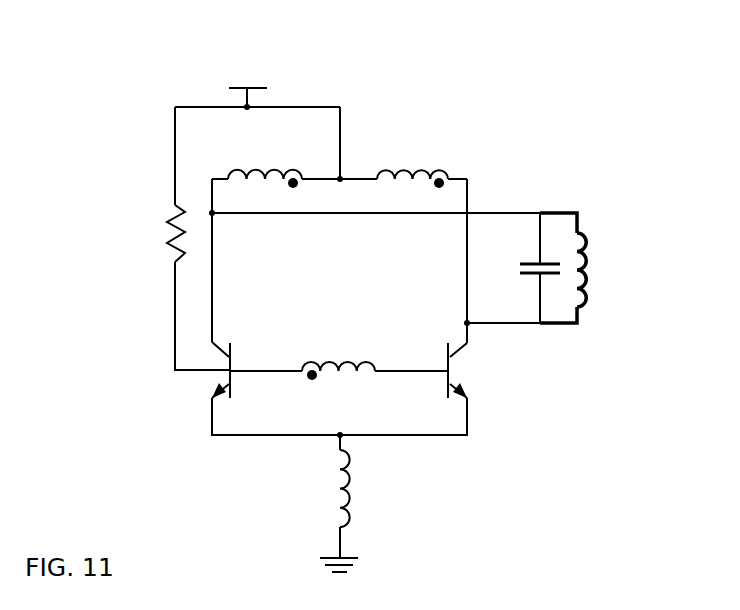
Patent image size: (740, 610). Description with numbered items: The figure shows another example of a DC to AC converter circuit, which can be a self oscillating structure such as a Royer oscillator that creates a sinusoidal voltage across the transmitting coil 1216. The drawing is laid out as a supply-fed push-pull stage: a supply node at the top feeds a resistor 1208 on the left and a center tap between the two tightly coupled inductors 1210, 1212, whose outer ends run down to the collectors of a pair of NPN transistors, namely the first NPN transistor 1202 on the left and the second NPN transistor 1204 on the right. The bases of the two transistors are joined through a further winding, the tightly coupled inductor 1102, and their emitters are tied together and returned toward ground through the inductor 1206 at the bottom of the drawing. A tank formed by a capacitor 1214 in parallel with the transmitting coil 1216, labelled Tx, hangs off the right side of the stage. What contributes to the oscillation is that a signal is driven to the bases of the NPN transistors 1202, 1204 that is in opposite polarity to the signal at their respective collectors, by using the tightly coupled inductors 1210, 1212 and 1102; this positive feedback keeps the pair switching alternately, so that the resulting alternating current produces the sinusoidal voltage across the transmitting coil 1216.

The tightly coupled inductor 1102 is at (155, 78).
The NPN transistor 1202 is at (215, 375).
The NPN transistor 1204 is at (459, 360).
The inductor 1206 is at (348, 483).
The resistor 1208 is at (168, 237).
The tightly coupled inductor 1210 is at (265, 164).
The tightly coupled inductor 1212 is at (410, 165).
The capacitor 1214 is at (520, 263).
The transmitting coil 1216 is at (593, 262).